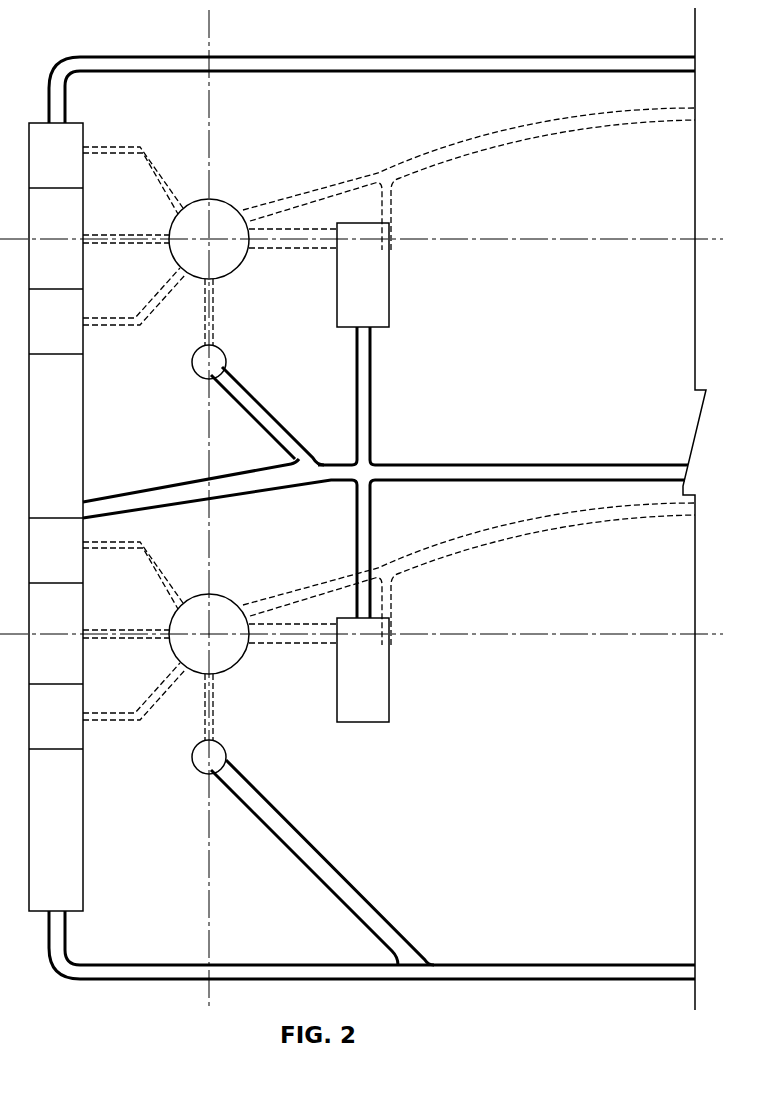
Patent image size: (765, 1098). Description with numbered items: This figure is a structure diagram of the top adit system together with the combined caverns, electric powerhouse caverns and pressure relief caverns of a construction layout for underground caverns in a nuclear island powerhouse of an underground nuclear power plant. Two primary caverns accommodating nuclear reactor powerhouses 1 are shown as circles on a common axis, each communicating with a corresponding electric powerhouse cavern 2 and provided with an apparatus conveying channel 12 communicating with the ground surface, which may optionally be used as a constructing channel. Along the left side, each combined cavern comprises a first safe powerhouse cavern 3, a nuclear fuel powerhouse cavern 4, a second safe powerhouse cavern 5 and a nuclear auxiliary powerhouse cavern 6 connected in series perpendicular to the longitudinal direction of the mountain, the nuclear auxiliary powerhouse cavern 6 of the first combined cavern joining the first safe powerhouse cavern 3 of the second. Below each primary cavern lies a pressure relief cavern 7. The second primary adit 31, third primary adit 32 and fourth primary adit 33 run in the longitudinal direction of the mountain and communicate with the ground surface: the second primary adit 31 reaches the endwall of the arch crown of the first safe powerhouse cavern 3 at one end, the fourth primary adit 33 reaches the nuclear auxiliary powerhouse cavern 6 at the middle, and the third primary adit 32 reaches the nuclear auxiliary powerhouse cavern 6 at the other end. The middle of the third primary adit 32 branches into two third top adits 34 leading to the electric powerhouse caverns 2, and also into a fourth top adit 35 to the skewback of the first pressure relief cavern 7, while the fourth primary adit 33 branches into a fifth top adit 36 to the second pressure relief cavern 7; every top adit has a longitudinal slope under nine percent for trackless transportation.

The primary cavern accommodating nuclear reactor powerhouse 1 is at (227, 258).
The electric powerhouse cavern 2 is at (380, 287).
The first safe powerhouse cavern 3 is at (70, 156).
The nuclear fuel powerhouse cavern 4 is at (71, 256).
The second safe powerhouse cavern 5 is at (71, 333).
The nuclear auxiliary powerhouse cavern 6 is at (71, 418).
The pressure relief cavern 7 is at (197, 370).
The apparatus conveying channel 12 is at (607, 115).
The second primary adit 31 is at (605, 63).
The third primary adit 32 is at (605, 472).
The fourth primary adit 33 is at (605, 975).
The third top adit 34 is at (363, 418).
The fourth top adit 35 is at (263, 417).
The fifth top adit 36 is at (312, 855).